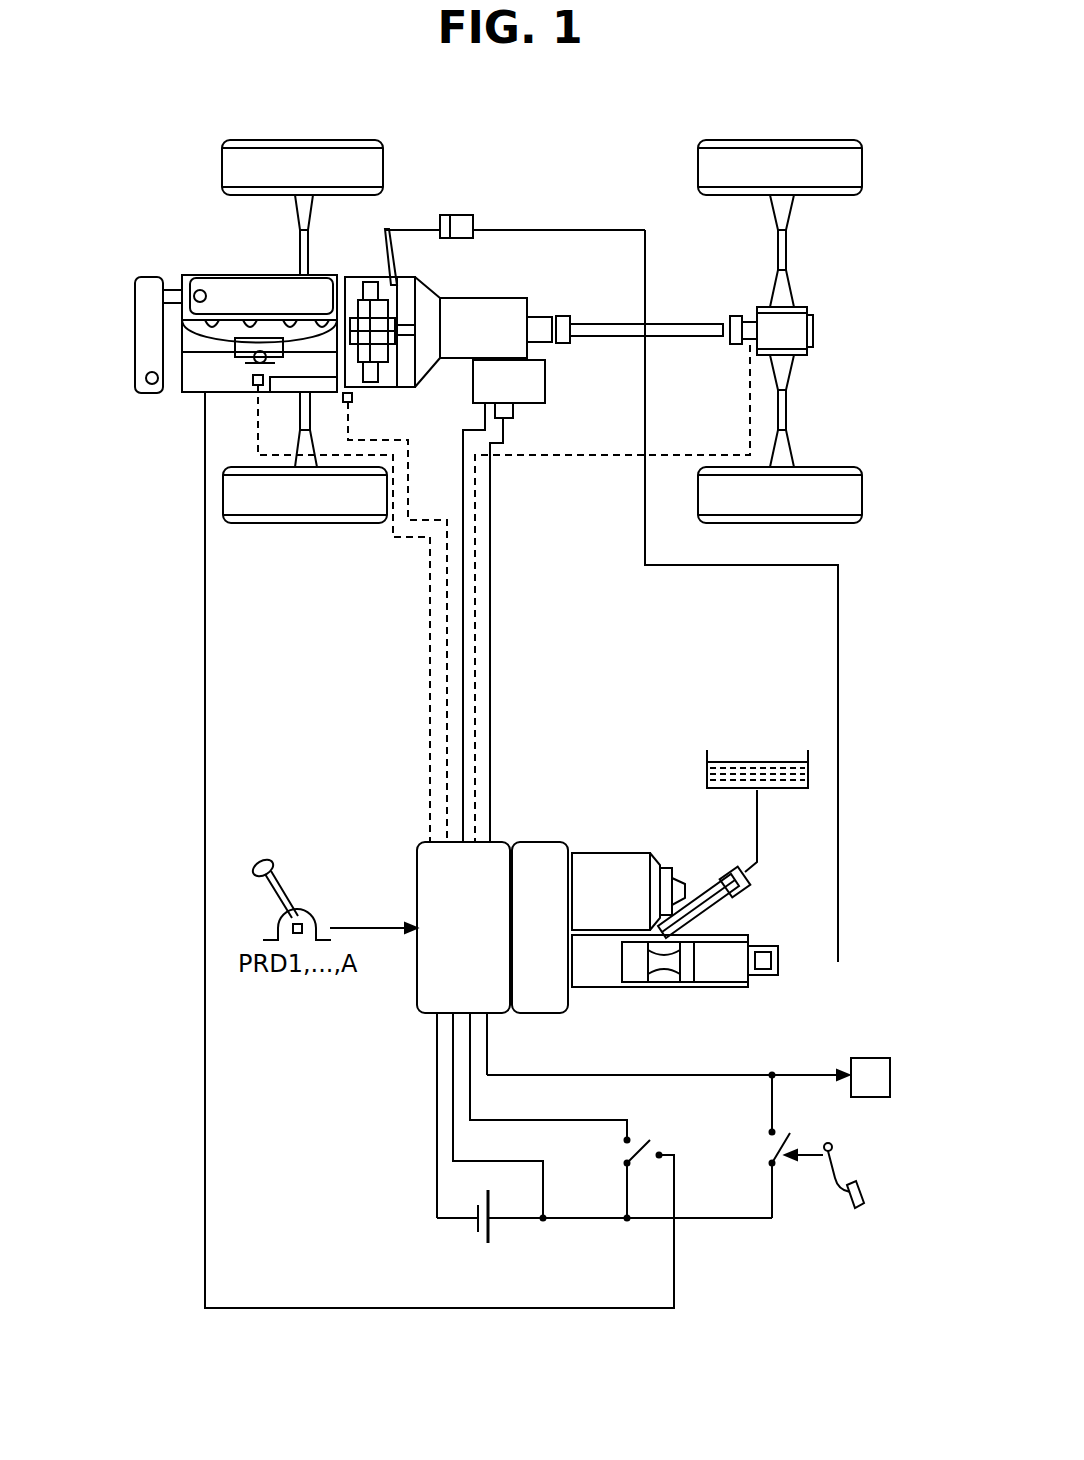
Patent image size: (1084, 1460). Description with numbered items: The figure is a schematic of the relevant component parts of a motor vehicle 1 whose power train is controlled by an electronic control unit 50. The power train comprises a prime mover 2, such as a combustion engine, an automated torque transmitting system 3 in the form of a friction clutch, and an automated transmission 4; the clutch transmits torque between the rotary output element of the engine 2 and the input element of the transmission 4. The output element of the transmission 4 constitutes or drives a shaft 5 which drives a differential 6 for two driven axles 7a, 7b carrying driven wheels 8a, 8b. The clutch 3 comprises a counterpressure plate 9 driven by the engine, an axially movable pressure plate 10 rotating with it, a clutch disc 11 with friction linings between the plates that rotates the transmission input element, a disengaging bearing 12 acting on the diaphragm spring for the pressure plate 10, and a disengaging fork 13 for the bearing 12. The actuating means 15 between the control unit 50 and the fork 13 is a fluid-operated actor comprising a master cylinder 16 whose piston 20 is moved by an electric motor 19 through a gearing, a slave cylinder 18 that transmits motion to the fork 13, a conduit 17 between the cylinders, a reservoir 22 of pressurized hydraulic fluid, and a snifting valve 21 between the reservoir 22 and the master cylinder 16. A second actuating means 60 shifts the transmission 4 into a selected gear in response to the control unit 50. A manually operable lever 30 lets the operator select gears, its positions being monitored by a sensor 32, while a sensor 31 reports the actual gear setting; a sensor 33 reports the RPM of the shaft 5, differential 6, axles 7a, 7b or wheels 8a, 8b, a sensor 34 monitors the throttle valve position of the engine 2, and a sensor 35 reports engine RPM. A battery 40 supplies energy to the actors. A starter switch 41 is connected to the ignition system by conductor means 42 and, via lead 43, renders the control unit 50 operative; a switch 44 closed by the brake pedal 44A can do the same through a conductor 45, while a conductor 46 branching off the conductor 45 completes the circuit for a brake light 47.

The motor vehicle 1 is at (565, 150).
The prime mover 2 is at (225, 292).
The automated torque transmitting system 3 is at (348, 270).
The automated transmission 4 is at (490, 343).
The shaft 5 is at (690, 326).
The differential 6 is at (792, 330).
The driven axle 7a is at (788, 253).
The driven axle 7b is at (788, 410).
The driven wheel 8a is at (838, 173).
The driven wheel 8b is at (838, 495).
The counterpressure plate 9 is at (358, 375).
The pressure plate 10 is at (378, 382).
The clutch disc 11 is at (370, 290).
The disengaging bearing 12 is at (395, 338).
The disengaging fork 13 is at (397, 258).
The actuating means 15 is at (535, 852).
The master cylinder 16 is at (710, 993).
The conduit 17 is at (840, 690).
The slave cylinder 18 is at (456, 215).
The electric motor 19 is at (605, 858).
The piston 20 is at (697, 955).
The snifting valve 21 is at (720, 880).
The reservoir 22 is at (756, 763).
The manually operable member 30 is at (268, 862).
The sensor 31 is at (513, 412).
The sensor 32 is at (300, 922).
The sensor 33 is at (748, 348).
The sensor 34 is at (255, 383).
The sensor 35 is at (344, 398).
The battery 40 is at (469, 1244).
The starter switch 41 is at (618, 1148).
The conductor means 42 is at (676, 1245).
The lead 43 is at (560, 1120).
The switch 44 is at (758, 1148).
The brake pedal 44A is at (828, 1165).
The conductor 45 is at (718, 1075).
The conductor 46 is at (795, 1075).
The brake light 47 is at (870, 1097).
The electronic control unit 50 is at (430, 868).
The second actuating means 60 is at (495, 395).